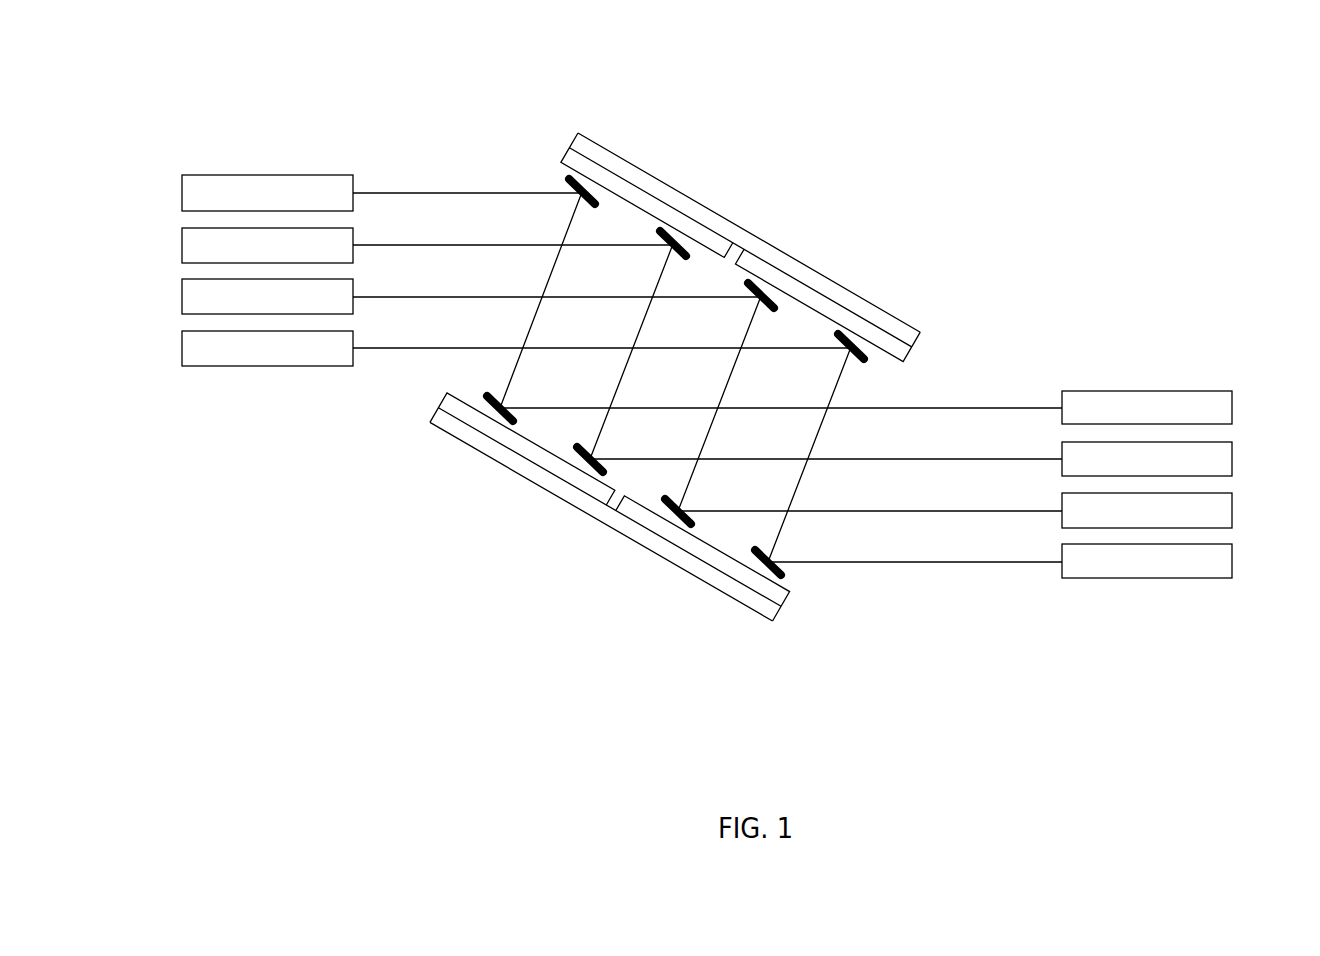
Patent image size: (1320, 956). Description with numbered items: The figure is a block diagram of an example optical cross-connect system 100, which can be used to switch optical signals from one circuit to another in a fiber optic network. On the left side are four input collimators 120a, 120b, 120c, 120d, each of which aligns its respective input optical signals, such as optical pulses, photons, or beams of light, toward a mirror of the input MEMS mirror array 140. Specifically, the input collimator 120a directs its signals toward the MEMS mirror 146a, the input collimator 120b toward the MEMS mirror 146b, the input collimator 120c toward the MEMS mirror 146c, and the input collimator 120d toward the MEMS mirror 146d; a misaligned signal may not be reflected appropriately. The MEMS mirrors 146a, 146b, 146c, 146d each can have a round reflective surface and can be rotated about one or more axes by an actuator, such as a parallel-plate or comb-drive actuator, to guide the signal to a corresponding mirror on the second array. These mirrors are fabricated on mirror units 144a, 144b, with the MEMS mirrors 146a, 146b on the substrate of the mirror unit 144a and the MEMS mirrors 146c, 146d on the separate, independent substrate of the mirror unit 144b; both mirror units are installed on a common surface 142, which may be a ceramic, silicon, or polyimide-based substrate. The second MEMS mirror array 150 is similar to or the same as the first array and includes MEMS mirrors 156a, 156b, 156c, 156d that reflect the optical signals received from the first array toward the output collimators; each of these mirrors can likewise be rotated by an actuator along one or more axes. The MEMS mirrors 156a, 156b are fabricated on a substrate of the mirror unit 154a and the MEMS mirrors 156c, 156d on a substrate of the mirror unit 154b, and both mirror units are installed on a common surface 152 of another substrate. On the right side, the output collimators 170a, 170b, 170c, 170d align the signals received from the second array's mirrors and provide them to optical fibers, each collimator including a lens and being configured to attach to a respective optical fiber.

The optical cross-connect system 100 is at (1200, 124).
The input collimator 120a is at (181, 172).
The input collimator 120b is at (181, 225).
The input collimator 120c is at (181, 277).
The input collimator 120d is at (181, 329).
The MEMS mirror array 140 is at (829, 213).
The common surface 142 is at (657, 188).
The mirror unit 144a is at (554, 149).
The mirror unit 144b is at (916, 357).
The MEMS mirror 146a is at (557, 182).
The MEMS mirror 146b is at (690, 242).
The MEMS mirror 146c is at (782, 298).
The MEMS mirror 146d is at (875, 365).
The MEMS mirror array 150 is at (480, 557).
The common surface 152 is at (462, 435).
The mirror unit 154a is at (436, 409).
The mirror unit 154b is at (791, 607).
The MEMS mirror 156a is at (477, 390).
The MEMS mirror 156b is at (570, 458).
The MEMS mirror 156c is at (660, 512).
The MEMS mirror 156d is at (797, 575).
The output collimator 170a is at (1238, 384).
The output collimator 170b is at (1238, 436).
The output collimator 170c is at (1238, 488).
The output collimator 170d is at (1238, 539).